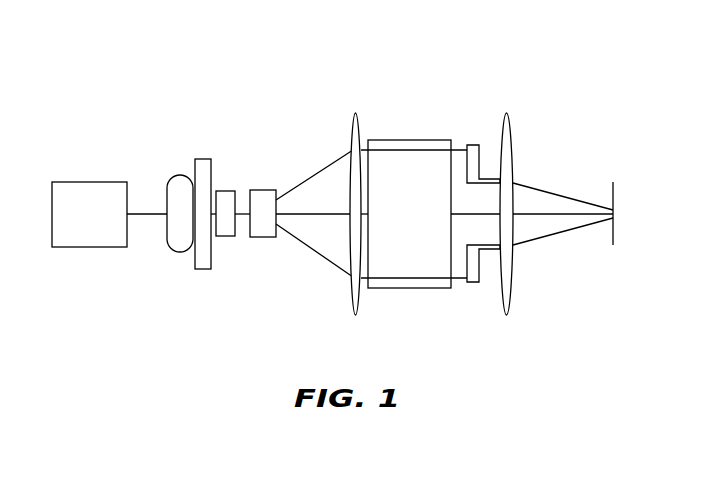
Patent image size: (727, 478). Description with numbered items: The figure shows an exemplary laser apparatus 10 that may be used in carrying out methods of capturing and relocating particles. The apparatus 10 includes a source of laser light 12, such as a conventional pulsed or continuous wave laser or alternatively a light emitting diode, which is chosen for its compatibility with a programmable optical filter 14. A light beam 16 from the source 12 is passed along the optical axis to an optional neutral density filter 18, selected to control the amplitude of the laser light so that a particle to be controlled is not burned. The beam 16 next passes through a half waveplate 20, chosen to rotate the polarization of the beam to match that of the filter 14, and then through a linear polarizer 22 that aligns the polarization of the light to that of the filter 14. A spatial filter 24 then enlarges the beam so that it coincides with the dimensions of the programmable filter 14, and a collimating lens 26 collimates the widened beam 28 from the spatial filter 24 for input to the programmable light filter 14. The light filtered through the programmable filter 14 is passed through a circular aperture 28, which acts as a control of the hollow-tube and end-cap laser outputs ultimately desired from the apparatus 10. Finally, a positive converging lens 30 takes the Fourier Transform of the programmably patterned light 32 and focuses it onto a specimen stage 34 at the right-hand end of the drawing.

The laser apparatus 10 is at (443, 58).
The source of laser light 12 is at (90, 247).
The programmable optical filter 14 is at (407, 289).
The light beam 16 is at (152, 212).
The neutral density filter 18 is at (172, 252).
The half waveplate 20 is at (205, 158).
The linear polarizer 22 is at (227, 237).
The spatial filter 24 is at (267, 190).
The collimating lens 26 is at (352, 300).
The widened beam / circular aperture 28 is at (332, 161).
The positive (converging) lens 30 is at (513, 290).
The programmably patterned light 32 is at (492, 179).
The specimen stage 34 is at (612, 245).